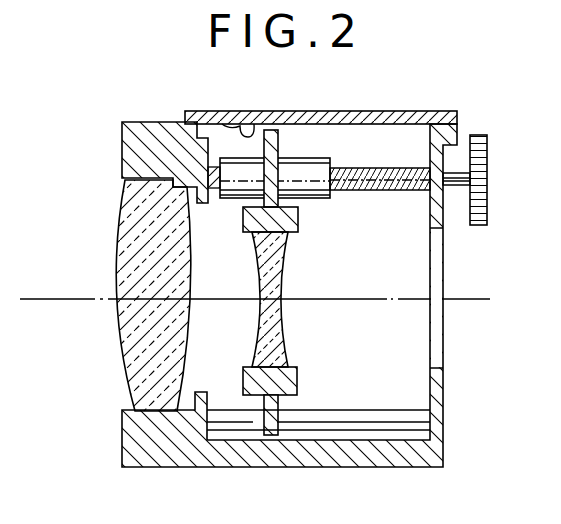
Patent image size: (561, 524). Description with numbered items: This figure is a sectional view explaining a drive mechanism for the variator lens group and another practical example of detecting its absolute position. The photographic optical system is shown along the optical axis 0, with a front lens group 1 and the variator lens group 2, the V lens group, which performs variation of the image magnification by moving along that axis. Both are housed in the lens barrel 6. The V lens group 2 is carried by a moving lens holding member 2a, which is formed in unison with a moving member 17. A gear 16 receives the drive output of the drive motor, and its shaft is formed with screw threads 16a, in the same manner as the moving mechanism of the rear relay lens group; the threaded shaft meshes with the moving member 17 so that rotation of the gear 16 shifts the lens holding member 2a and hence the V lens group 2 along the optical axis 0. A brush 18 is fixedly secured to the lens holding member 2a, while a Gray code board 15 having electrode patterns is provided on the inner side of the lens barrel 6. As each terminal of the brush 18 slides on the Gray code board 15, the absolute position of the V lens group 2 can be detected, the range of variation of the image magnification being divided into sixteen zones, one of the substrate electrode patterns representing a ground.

The optical axis 0 is at (66, 298).
The photographic optical system lens group 1 is at (123, 337).
The variator lens group 2 is at (283, 347).
The moving lens holding member 2a is at (291, 226).
The lens barrel 6 is at (190, 448).
The Gray code board 15 is at (425, 112).
The gear 16 is at (486, 210).
The screw threads 16a is at (398, 196).
The moving member 17 is at (302, 170).
The brush 18 is at (250, 122).